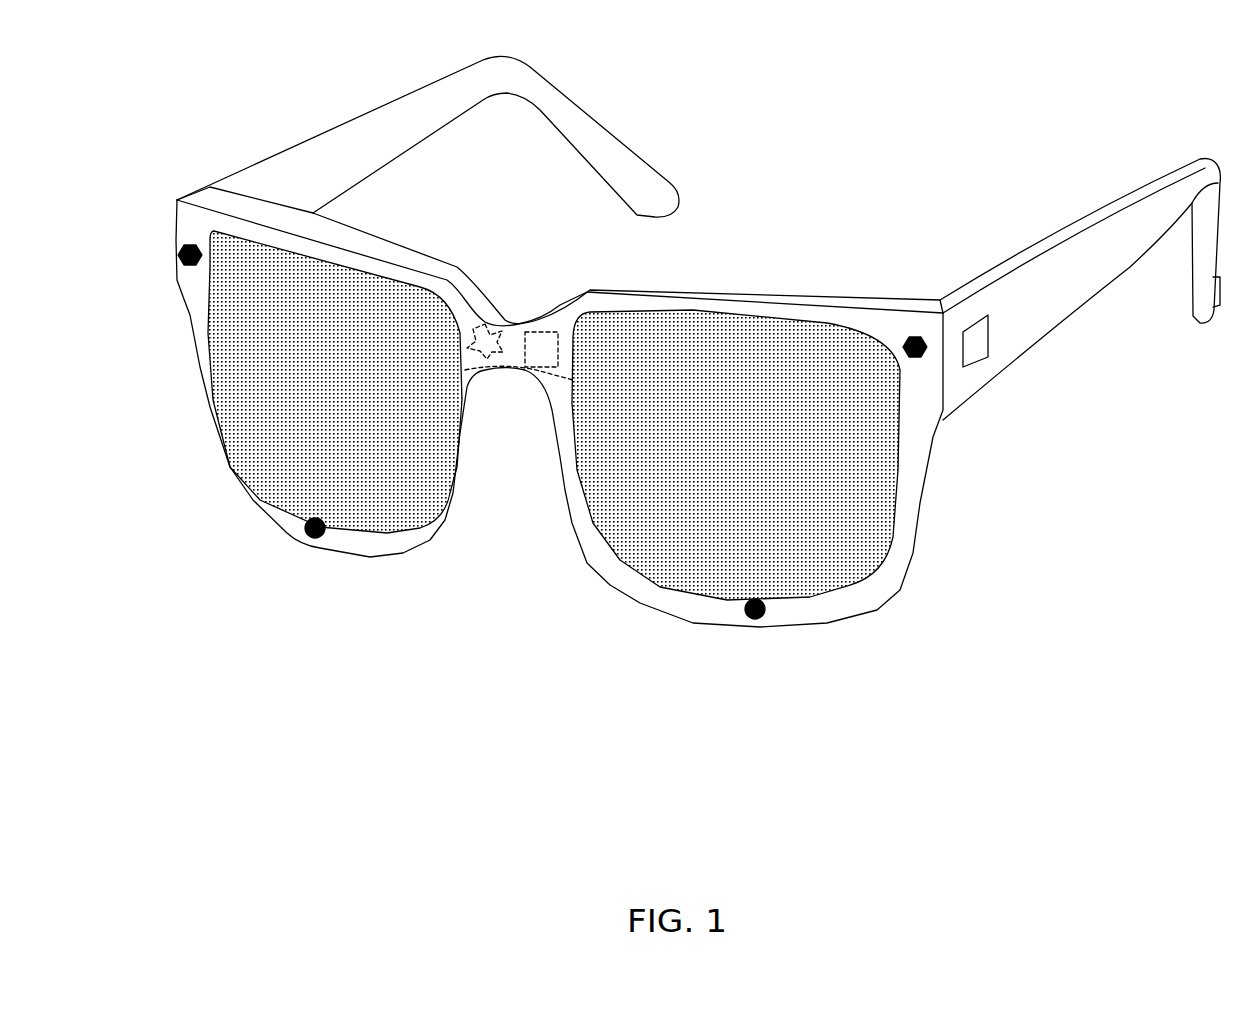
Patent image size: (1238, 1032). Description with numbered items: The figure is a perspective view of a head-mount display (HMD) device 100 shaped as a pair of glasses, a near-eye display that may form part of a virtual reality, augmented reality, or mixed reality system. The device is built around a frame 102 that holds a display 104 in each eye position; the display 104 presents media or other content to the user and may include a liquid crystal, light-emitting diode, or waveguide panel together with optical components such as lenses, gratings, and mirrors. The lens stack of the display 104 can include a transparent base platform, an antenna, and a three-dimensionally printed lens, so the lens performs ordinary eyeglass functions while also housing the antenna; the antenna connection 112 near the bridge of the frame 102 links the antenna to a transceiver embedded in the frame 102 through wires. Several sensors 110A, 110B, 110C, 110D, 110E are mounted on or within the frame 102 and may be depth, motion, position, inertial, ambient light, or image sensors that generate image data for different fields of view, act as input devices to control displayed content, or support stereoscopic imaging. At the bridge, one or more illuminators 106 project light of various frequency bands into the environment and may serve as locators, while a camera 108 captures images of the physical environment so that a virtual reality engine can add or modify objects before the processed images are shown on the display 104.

The head-mount display (HMD) device 100 is at (1180, 37).
The frame 102 is at (990, 263).
The display 104 is at (280, 465).
The illuminator(s) 106 is at (480, 327).
The camera 108 is at (537, 342).
The sensor 110A is at (977, 348).
The sensor 110B is at (755, 620).
The sensor 110C is at (318, 540).
The sensor 110D is at (180, 247).
The sensor 110E is at (913, 335).
The antenna connection 112 is at (484, 368).